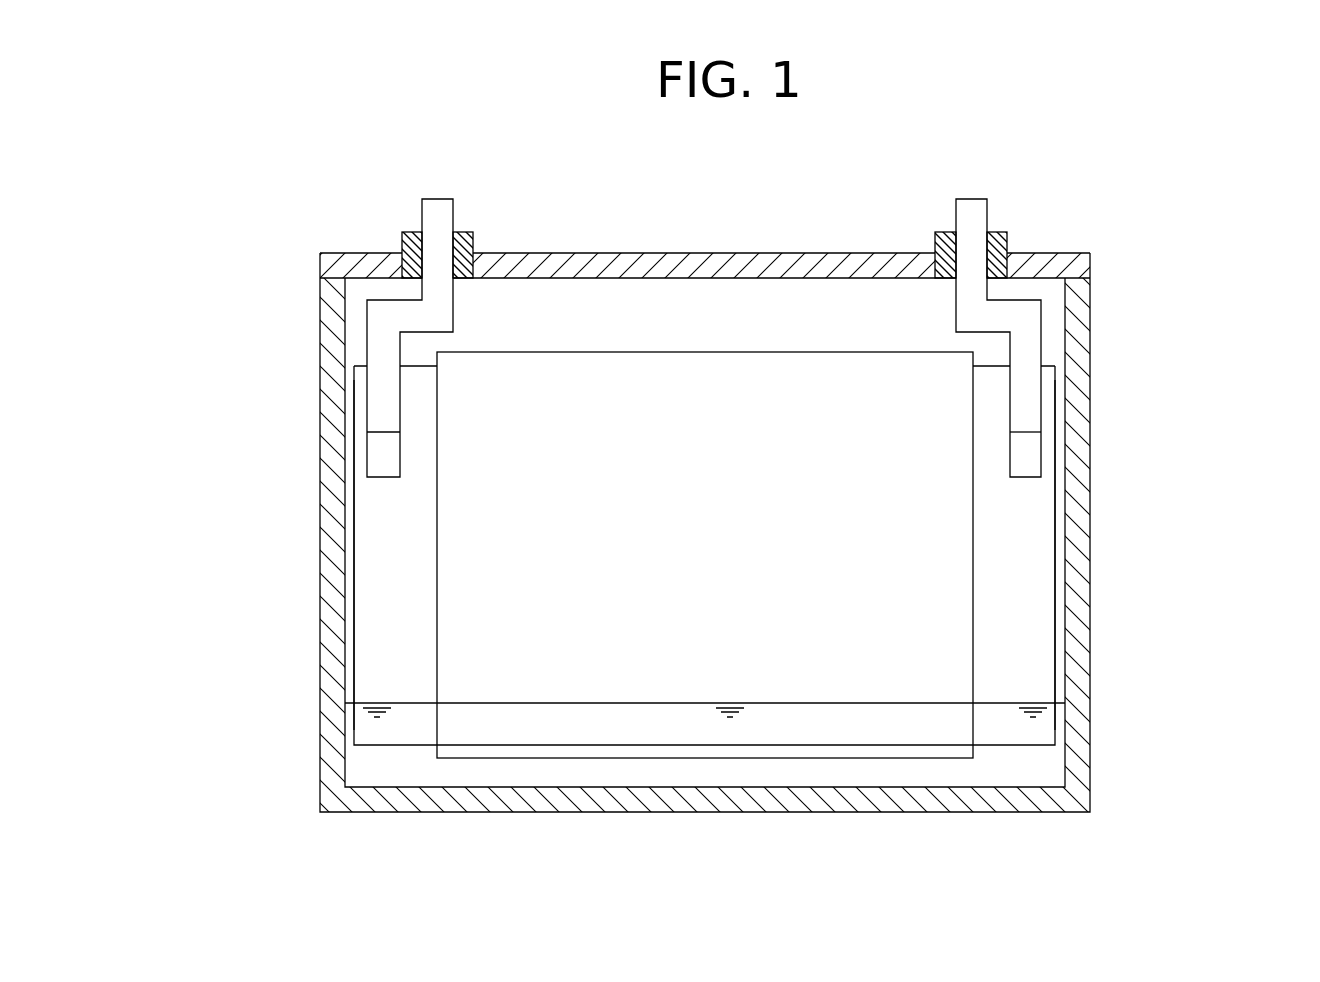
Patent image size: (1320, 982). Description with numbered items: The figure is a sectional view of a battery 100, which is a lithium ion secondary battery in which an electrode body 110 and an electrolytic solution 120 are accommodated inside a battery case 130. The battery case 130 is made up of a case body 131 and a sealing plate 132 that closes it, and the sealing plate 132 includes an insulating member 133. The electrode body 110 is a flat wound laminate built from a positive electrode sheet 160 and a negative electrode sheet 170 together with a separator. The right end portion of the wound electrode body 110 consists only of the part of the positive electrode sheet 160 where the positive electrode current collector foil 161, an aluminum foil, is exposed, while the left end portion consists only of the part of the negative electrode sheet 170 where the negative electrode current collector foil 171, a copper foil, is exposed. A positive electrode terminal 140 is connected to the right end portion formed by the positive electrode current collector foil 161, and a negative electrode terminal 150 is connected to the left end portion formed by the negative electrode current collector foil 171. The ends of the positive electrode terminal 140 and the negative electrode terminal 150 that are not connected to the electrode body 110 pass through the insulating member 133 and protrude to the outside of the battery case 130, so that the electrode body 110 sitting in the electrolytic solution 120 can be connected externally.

The battery 100 is at (322, 204).
The electrode body 110 is at (822, 643).
The electrolytic solution 120 is at (1052, 764).
The battery case 130 is at (1185, 233).
The case body 131 is at (1090, 305).
The sealing plate 132 is at (327, 263).
The insulating member 133 is at (472, 232).
The positive electrode terminal 140 is at (973, 203).
The negative electrode terminal 150 is at (445, 205).
The positive electrode sheet 160 is at (1026, 626).
The positive electrode current collector foil 161 is at (1022, 540).
The negative electrode sheet 170 is at (392, 620).
The negative electrode current collector foil 171 is at (392, 580).